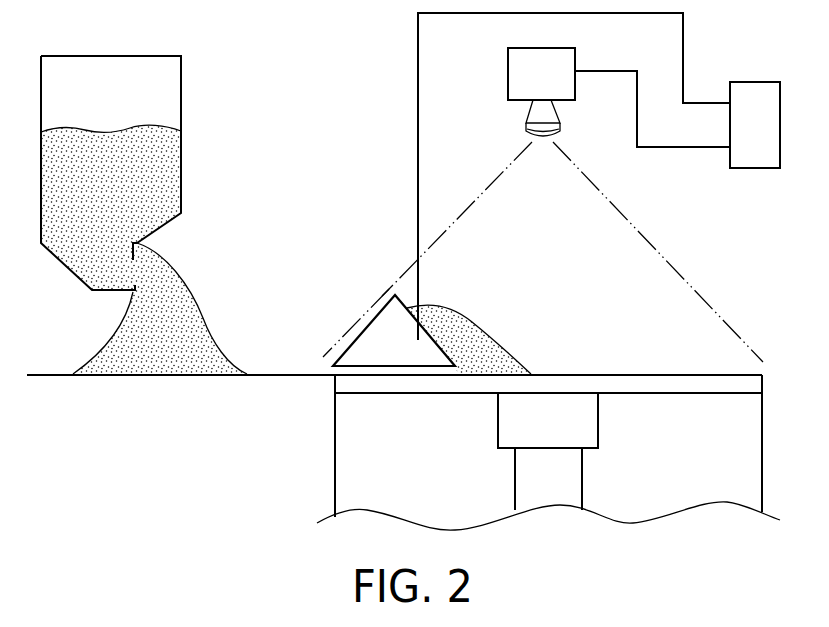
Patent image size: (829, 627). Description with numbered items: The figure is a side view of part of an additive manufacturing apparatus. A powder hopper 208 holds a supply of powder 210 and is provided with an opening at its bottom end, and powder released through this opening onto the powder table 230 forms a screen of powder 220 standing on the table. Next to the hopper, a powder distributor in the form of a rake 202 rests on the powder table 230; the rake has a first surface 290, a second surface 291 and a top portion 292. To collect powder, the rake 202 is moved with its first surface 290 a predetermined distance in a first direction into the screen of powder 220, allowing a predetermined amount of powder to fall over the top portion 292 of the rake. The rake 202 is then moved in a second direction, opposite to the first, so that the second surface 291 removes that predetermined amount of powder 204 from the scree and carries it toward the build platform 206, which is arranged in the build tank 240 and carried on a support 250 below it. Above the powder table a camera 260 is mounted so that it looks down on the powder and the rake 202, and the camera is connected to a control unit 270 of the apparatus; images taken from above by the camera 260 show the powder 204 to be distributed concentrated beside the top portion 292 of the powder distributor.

The powder hopper 208 is at (200, 92).
The powder in hopper 210 is at (145, 185).
The screen of powder 220 is at (182, 315).
The powder table 230 is at (273, 375).
The build tank 240 is at (335, 450).
The build platform 206 is at (643, 382).
The platform support 250 is at (550, 480).
The powder distributor 202 is at (377, 332).
The second surface of the rake 291 is at (447, 340).
The deposited powder 204 is at (483, 347).
The first surface of the rake 290 is at (338, 345).
The top portion of the powder distributor 292 is at (388, 293).
The camera 260 is at (533, 75).
The control unit 270 is at (758, 137).